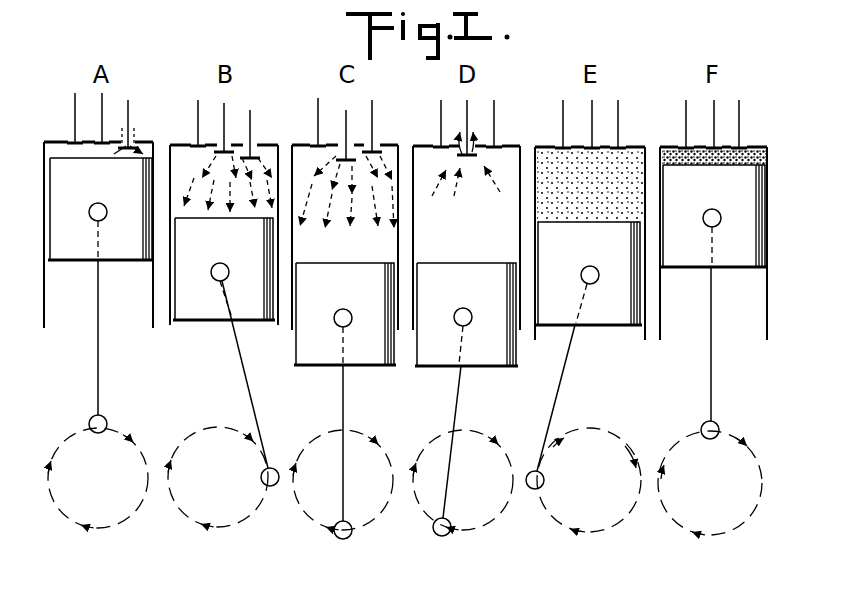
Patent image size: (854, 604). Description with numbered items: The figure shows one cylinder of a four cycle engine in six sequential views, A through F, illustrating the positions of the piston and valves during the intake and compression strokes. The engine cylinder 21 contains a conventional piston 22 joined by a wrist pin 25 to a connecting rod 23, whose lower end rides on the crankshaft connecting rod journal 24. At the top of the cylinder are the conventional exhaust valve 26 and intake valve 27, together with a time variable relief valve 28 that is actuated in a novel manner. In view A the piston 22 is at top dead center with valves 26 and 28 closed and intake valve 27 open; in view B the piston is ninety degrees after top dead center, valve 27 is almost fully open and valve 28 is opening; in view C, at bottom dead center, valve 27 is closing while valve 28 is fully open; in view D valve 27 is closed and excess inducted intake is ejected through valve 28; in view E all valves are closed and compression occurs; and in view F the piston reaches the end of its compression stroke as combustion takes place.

The engine cylinder 21 is at (44, 295).
The piston 22 is at (113, 250).
The connecting rod 23 is at (98, 380).
The crankshaft connecting rod journal 24 is at (98, 433).
The wrist pin 25 is at (103, 207).
The exhaust valve 26 is at (75, 111).
The intake valve 27 is at (128, 115).
The time variable relief valve 28 is at (102, 103).